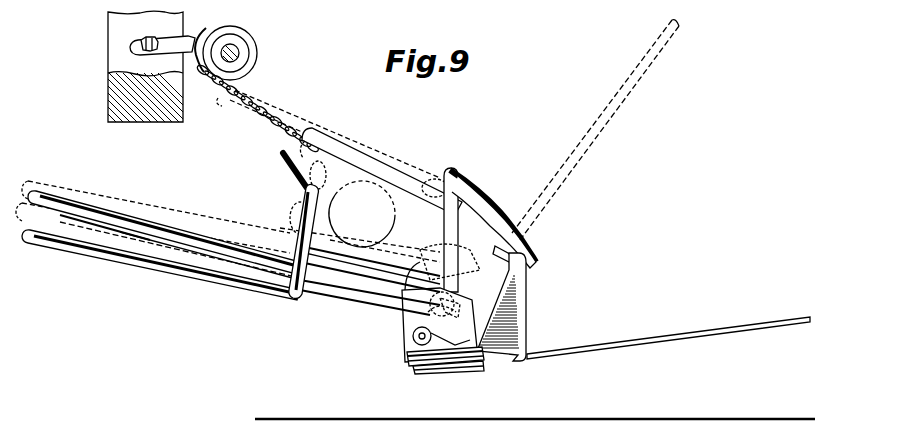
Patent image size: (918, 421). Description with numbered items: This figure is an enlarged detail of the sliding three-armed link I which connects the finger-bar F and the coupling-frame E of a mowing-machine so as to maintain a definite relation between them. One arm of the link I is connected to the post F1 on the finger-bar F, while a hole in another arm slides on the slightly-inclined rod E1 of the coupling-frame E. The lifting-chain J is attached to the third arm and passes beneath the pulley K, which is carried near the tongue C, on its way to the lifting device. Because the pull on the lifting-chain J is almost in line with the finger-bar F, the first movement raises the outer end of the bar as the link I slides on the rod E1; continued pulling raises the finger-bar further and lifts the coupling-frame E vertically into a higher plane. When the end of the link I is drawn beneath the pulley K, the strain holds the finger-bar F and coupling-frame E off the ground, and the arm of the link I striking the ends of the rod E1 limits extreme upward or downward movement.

The tongue C is at (120, 38).
The pulley K is at (244, 57).
The lifting-chain J is at (262, 120).
The sliding three-armed link I is at (381, 152).
The coupling-frame E is at (240, 285).
The inclined rod of the coupling-frame E1 is at (338, 305).
The finger-bar F is at (565, 183).
The post on the finger-bar F1 is at (527, 302).